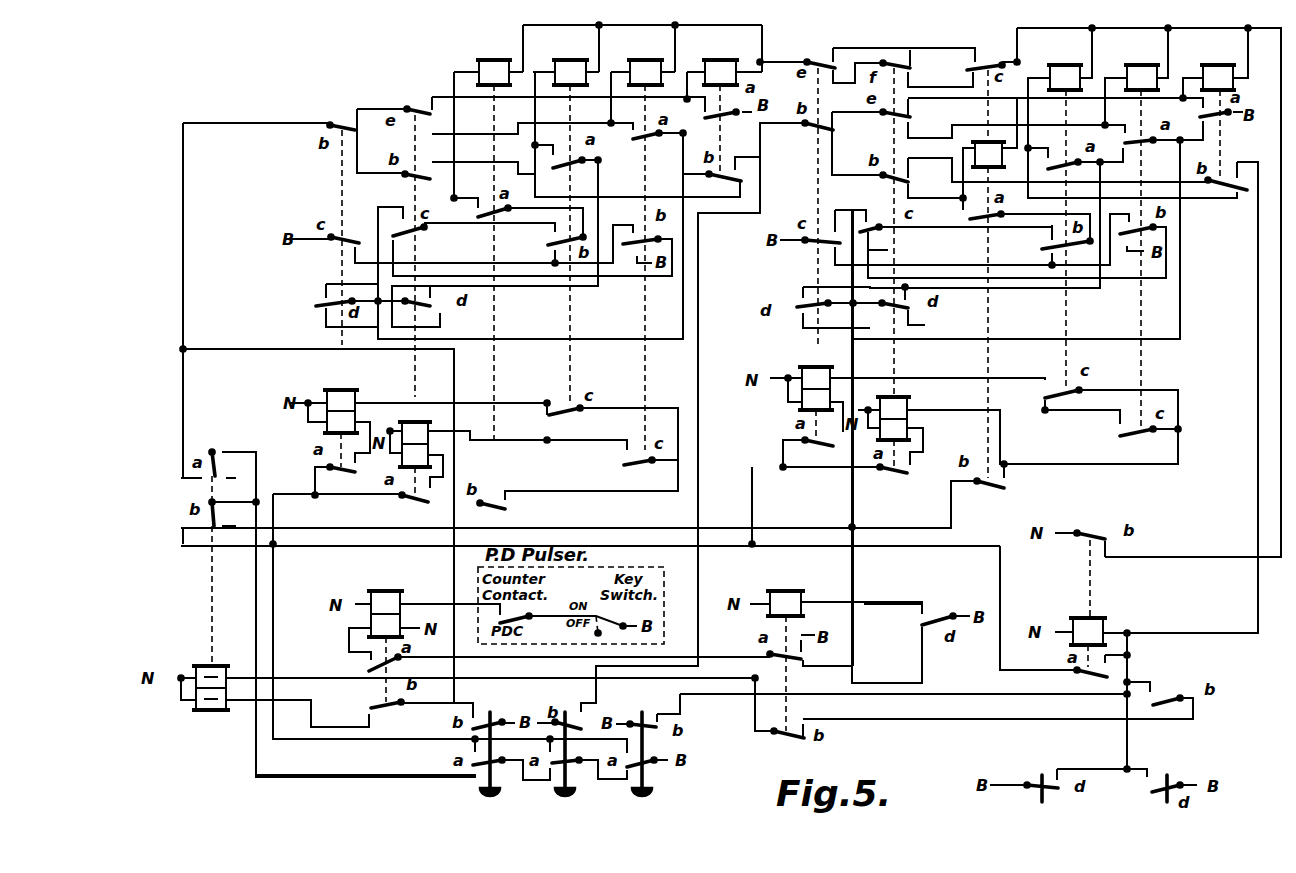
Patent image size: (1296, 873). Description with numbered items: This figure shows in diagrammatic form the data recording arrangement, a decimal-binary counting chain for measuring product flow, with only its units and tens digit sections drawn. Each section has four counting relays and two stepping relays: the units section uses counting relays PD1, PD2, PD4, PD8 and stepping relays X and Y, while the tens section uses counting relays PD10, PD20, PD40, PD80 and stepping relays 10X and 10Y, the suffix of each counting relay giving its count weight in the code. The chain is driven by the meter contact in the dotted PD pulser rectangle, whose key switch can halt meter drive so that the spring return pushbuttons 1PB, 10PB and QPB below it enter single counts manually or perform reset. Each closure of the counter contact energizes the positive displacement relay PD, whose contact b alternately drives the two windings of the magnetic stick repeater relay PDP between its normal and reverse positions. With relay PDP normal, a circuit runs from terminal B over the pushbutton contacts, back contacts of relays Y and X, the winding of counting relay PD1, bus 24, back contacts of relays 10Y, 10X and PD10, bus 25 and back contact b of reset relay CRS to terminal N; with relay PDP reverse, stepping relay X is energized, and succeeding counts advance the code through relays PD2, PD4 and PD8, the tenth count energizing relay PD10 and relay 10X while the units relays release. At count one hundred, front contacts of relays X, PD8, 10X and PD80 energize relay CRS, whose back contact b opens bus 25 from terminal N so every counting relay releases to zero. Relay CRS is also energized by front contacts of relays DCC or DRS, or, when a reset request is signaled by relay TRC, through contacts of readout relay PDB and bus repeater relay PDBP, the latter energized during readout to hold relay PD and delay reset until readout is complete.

The bus 24 is at (762, 28).
The bus 25 is at (1017, 33).
The counting relay PD1 is at (490, 58).
The counting relay PD2 is at (567, 58).
The counting relay PD4 is at (642, 58).
The counting relay PD8 is at (718, 58).
The counting relay PD10 is at (987, 99).
The counting relay PD20 is at (1053, 66).
The counting relay PD40 is at (1131, 66).
The counting relay PD80 is at (1207, 66).
The stepping relay Y is at (341, 262).
The stepping relay X is at (415, 269).
The stepping relay 10Y is at (814, 220).
The stepping relay 10X is at (890, 234).
The positive displacement relay PD is at (385, 603).
The repeater relay PDP is at (209, 567).
The bus repeater relay PDBP is at (774, 590).
The reset relay CRS is at (1079, 572).
The readout relay PDB is at (932, 599).
The reset request relay TRC is at (1171, 680).
The relay DCC is at (1036, 774).
The relay DRS is at (1164, 774).
The pushbutton 1PB is at (478, 739).
The pushbutton 10PB is at (552, 739).
The reset pushbutton QPB is at (628, 739).